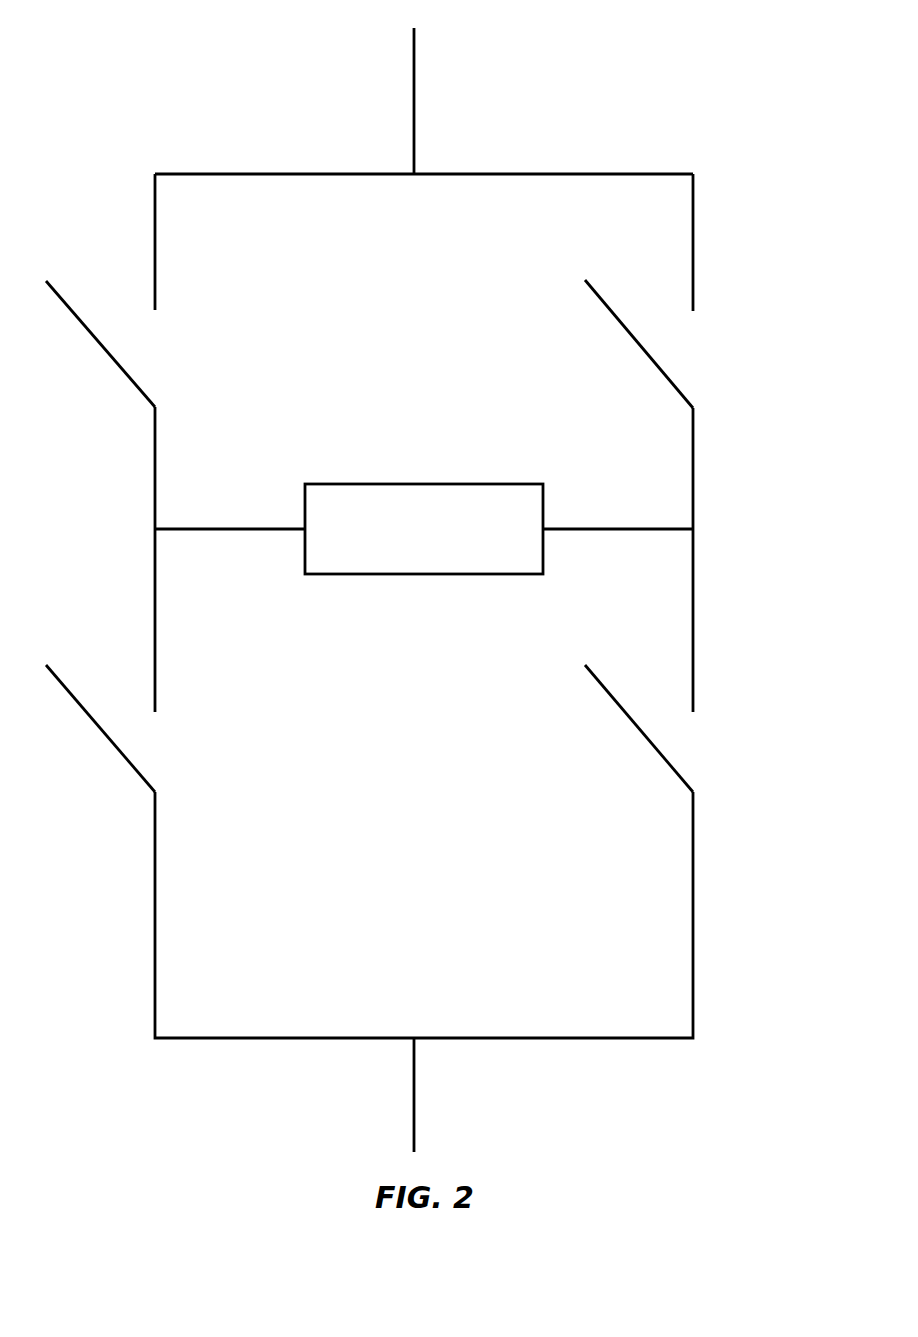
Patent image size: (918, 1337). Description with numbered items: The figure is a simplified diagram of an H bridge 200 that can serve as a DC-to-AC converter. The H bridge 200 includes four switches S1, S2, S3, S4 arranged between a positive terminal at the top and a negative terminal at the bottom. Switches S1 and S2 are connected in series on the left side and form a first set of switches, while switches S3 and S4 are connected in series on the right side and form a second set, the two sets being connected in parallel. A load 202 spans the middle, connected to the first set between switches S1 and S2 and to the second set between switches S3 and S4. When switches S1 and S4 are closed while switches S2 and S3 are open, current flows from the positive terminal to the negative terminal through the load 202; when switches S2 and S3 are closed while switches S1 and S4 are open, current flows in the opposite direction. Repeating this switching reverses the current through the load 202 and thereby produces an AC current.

The H bridge 200 is at (202, 62).
The load 202 is at (420, 484).
The switch S1 is at (147, 344).
The switch S2 is at (147, 728).
The switch S3 is at (686, 344).
The switch S4 is at (685, 728).